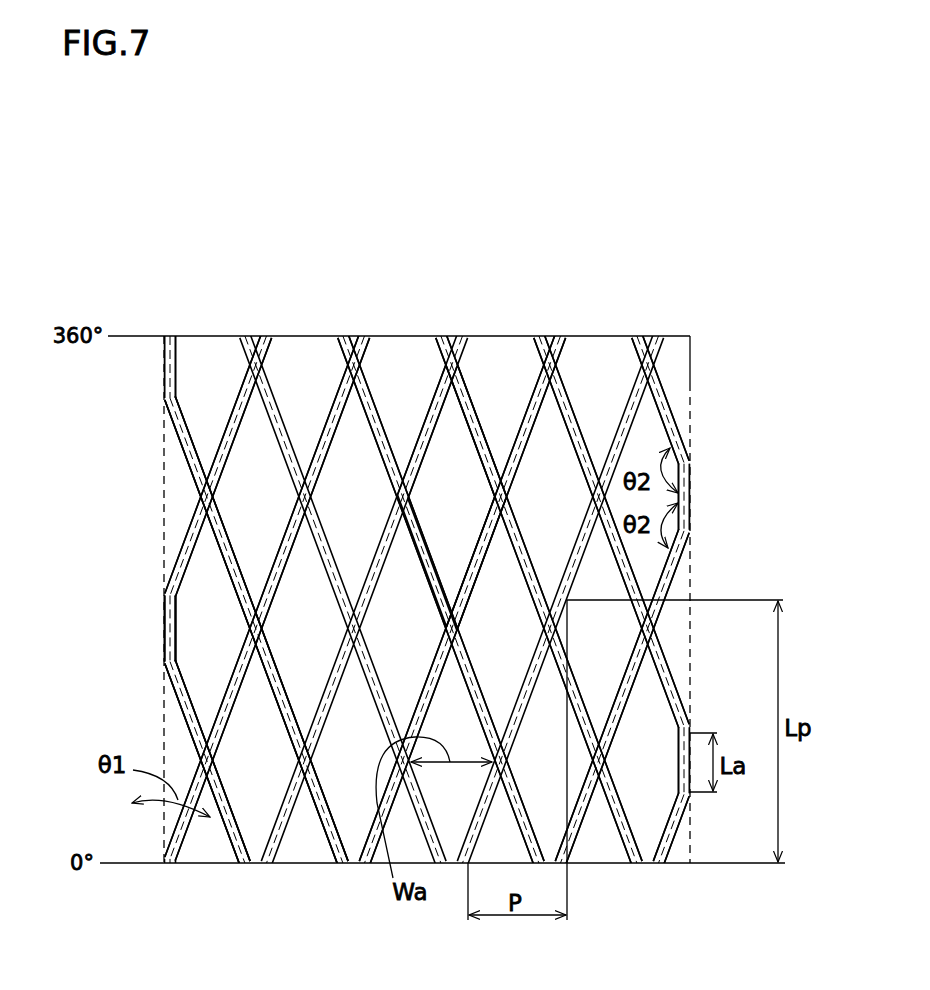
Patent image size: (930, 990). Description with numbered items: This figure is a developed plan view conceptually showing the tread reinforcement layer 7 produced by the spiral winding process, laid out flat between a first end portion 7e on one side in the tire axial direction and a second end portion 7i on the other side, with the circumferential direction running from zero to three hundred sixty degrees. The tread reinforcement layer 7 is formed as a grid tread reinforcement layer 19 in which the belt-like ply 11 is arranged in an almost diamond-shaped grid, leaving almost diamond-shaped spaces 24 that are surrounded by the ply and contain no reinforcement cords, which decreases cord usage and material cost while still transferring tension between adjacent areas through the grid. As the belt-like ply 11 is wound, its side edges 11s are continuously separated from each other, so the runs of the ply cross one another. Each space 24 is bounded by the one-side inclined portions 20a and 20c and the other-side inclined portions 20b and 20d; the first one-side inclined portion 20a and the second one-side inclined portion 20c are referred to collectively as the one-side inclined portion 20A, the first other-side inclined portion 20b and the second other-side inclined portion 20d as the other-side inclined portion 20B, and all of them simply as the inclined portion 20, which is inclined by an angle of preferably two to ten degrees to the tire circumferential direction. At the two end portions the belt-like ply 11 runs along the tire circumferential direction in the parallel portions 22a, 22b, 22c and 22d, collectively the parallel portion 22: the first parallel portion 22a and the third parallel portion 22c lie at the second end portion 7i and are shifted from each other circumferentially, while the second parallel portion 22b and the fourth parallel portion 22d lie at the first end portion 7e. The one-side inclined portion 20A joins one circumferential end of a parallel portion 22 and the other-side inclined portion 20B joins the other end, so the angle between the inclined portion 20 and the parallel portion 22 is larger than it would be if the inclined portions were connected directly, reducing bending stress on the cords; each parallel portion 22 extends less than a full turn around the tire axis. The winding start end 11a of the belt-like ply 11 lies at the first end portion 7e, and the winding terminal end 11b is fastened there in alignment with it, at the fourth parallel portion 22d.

The tread reinforcement layer 7 is at (442, 521).
The grid tread reinforcement layer 19 is at (232, 308).
The first end portion 7e is at (163, 362).
The second end portion 7i is at (692, 372).
The almost diamond-shaped space 24 is at (455, 502).
The inclined portion 20 is at (587, 224).
The one-side inclined portion 20A is at (507, 275).
The other-side inclined portion 20B is at (482, 275).
The first one-side inclined portion 20a is at (544, 406).
The first other-side inclined portion 20b is at (381, 400).
The second one-side inclined portion 20c is at (590, 352).
The second other-side inclined portion 20d is at (470, 350).
The parallel portion 22 is at (431, 640).
The first parallel portion 22a is at (681, 765).
The second parallel portion 22b is at (166, 395).
The third parallel portion 22c is at (688, 494).
The fourth parallel portion 22d is at (165, 632).
The belt-like ply 11 is at (227, 827).
The winding start end 11a is at (165, 606).
The winding terminal end 11b is at (163, 592).
The side edges 11s is at (231, 800).